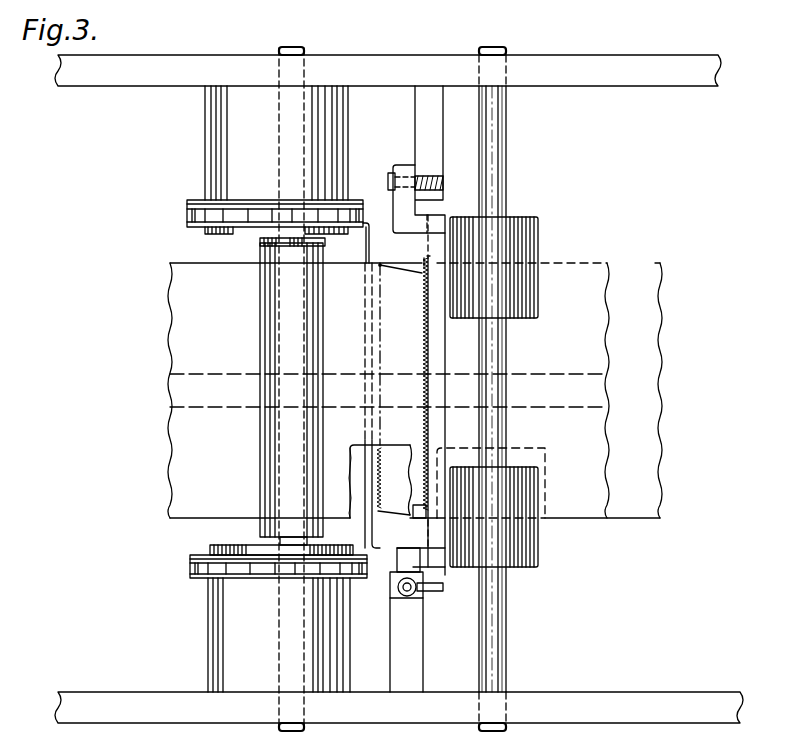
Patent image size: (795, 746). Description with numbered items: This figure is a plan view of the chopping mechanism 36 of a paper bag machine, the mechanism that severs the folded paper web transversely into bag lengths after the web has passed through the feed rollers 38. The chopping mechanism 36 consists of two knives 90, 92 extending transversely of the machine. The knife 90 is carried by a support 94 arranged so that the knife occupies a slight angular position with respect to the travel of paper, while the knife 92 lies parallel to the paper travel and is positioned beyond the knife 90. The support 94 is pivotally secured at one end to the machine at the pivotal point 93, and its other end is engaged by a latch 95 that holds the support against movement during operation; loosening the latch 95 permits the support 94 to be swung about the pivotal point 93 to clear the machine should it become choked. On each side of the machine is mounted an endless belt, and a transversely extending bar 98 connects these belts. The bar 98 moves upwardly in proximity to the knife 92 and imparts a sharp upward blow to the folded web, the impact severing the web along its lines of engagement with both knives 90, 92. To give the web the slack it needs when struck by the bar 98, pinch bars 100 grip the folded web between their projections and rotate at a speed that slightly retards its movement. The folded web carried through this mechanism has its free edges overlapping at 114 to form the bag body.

The chopping mechanism 36 is at (423, 294).
The feed rollers 38 is at (527, 229).
The knife 90 is at (427, 343).
The knife 92 is at (381, 511).
The pivotal point 93 is at (445, 182).
The support 94 is at (438, 353).
The latch 95 is at (398, 590).
The bar 98 is at (365, 533).
The pinch bars 100 is at (265, 468).
The overlapping free edges 114 is at (560, 390).